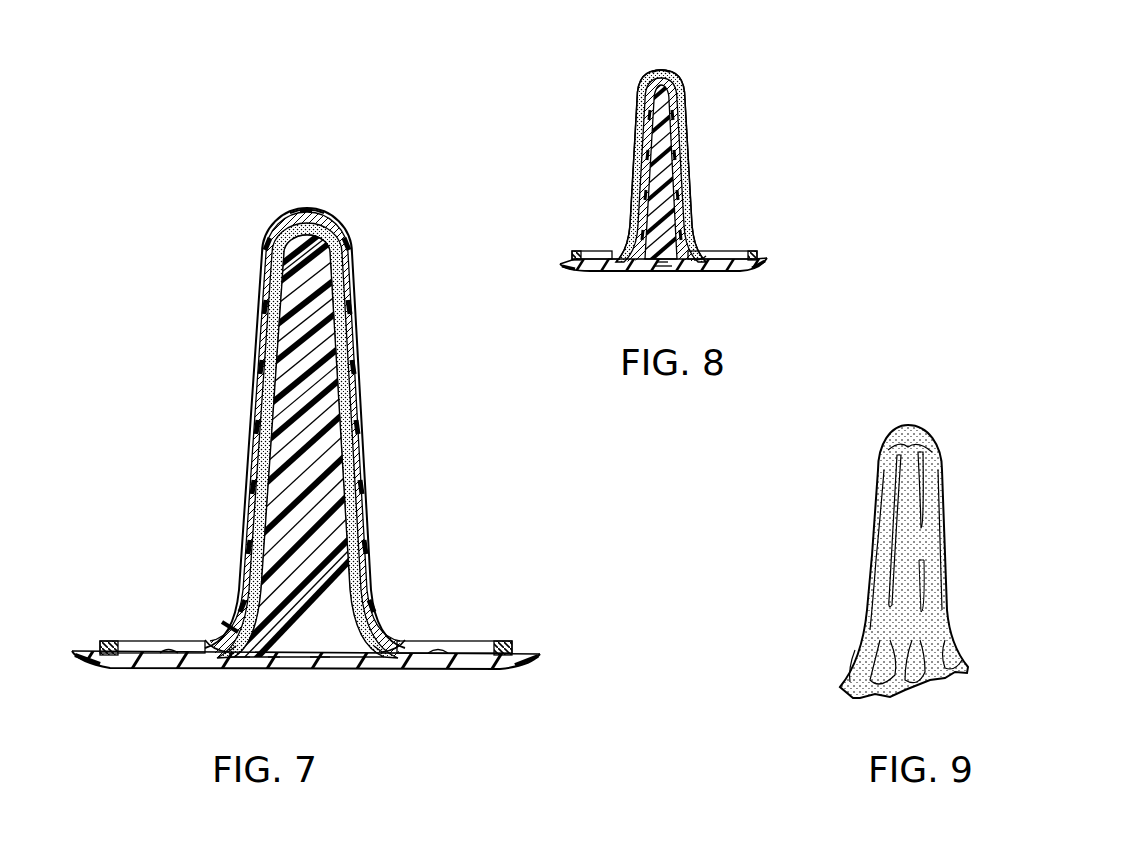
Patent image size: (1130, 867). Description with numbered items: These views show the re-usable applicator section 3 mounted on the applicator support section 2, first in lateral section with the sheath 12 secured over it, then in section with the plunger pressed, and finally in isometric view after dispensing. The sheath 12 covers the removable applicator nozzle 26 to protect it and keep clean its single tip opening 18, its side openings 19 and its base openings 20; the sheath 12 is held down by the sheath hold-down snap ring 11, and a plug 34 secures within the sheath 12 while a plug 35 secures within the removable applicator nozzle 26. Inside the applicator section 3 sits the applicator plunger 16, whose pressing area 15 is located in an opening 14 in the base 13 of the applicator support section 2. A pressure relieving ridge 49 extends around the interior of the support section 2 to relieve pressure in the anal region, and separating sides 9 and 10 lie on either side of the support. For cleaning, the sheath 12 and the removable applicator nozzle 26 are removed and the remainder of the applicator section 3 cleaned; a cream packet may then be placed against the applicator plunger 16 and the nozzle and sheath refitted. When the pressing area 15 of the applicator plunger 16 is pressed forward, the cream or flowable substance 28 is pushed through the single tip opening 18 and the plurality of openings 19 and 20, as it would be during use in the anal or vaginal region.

In FIG. 7, the applicator support section 2 is at (130, 672).
In FIG. 8, the applicator support section 2 is at (582, 272).
In FIG. 7, the applicator section 3 is at (376, 511).
In FIG. 8, the applicator section 3 is at (709, 183).
In FIG. 9, the applicator section 3 is at (952, 563).
In FIG. 7, the separating side 9 is at (540, 652).
In FIG. 8, the separating side 9 is at (767, 259).
In FIG. 7, the separating side 10 is at (78, 651).
In FIG. 8, the separating side 10 is at (560, 264).
In FIG. 7, the sheath hold-down snap ring 11 is at (150, 651).
In FIG. 8, the sheath hold-down snap ring 11 is at (611, 259).
In FIG. 7, the sheath 12 is at (248, 490).
In FIG. 7, the base 13 is at (240, 667).
In FIG. 8, the base 13 is at (612, 266).
In FIG. 7, the opening 14 is at (318, 667).
In FIG. 8, the opening 14 is at (663, 271).
In FIG. 7, the pressing area 15 is at (273, 662).
In FIG. 8, the pressing area 15 is at (662, 270).
In FIG. 7, the applicator plunger 16 is at (298, 299).
In FIG. 8, the applicator plunger 16 is at (655, 131).
In FIG. 7, the single tip opening 18 is at (305, 209).
In FIG. 8, the single tip opening 18 is at (661, 69).
In FIG. 7, the side openings 19 is at (262, 378).
In FIG. 8, the side openings 19 is at (640, 163).
In FIG. 7, the base openings 20 is at (385, 605).
In FIG. 8, the base openings 20 is at (696, 257).
In FIG. 7, the removable applicator nozzle 26 is at (258, 443).
In FIG. 8, the removable applicator nozzle 26 is at (645, 183).
In FIG. 9, the removable applicator nozzle 26 is at (882, 678).
In FIG. 7, the cream or flowable substance 28 is at (262, 532).
In FIG. 8, the cream or flowable substance 28 is at (688, 130).
In FIG. 9, the cream or flowable substance 28 is at (940, 628).
In FIG. 7, the plug 34 is at (222, 632).
In FIG. 7, the plug 35 is at (232, 620).
In FIG. 7, the pressure relieving ridge 49 is at (108, 641).
In FIG. 8, the pressure relieving ridge 49 is at (574, 251).